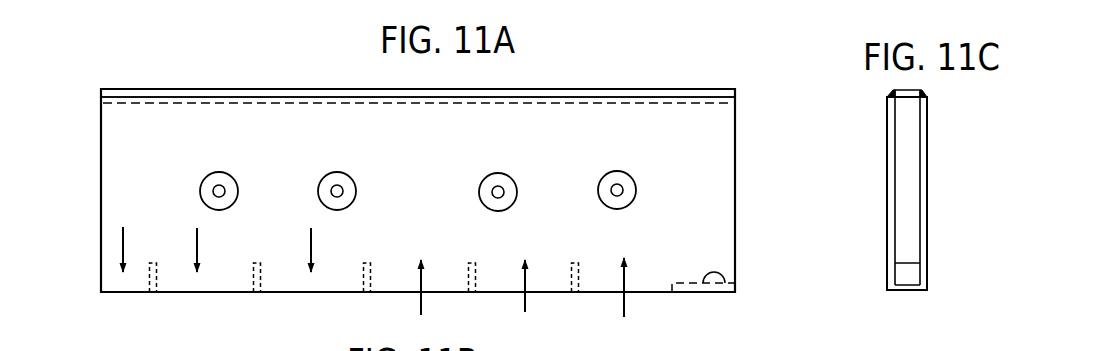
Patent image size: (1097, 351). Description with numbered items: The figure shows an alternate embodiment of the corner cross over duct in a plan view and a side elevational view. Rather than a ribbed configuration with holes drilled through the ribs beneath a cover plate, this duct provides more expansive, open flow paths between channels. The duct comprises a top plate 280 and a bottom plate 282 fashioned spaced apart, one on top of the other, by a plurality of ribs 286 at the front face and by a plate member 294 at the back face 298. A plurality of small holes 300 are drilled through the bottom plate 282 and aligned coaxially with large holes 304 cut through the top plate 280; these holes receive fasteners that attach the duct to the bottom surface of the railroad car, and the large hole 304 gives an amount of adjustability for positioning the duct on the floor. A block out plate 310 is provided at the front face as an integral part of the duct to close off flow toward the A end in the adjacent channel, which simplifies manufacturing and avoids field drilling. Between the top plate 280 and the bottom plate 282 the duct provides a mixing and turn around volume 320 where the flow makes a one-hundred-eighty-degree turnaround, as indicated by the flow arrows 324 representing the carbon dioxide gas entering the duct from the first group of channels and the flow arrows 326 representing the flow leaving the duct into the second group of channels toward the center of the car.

In FIG. 11C, the top plate 280 is at (887, 152).
In FIG. 11C, the bottom plate 282 is at (928, 158).
In FIG. 11A, the ribs 286 is at (152, 280).
In FIG. 11A, the plate member 294 is at (540, 89).
In FIG. 11C, the plate member 294 is at (907, 89).
In FIG. 11A, the back face 298 is at (627, 88).
In FIG. 11C, the back face 298 is at (923, 98).
In FIG. 11A, the small holes 300 is at (620, 184).
In FIG. 11A, the large holes 304 is at (636, 188).
In FIG. 11A, the block out plate 310 is at (722, 274).
In FIG. 11A, the mixing and turn around volume 320 is at (133, 158).
In FIG. 11C, the mixing and turn around volume 320 is at (909, 203).
In FIG. 11A, the flow arrows 324 is at (421, 287).
In FIG. 11A, the flow arrows 326 is at (123, 243).